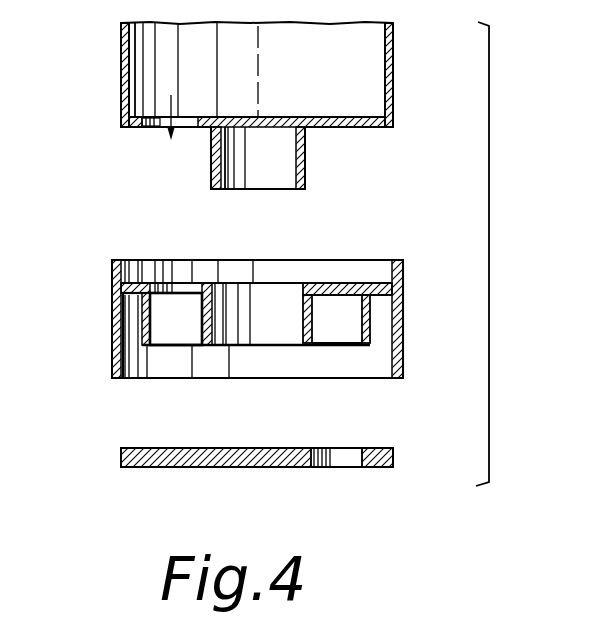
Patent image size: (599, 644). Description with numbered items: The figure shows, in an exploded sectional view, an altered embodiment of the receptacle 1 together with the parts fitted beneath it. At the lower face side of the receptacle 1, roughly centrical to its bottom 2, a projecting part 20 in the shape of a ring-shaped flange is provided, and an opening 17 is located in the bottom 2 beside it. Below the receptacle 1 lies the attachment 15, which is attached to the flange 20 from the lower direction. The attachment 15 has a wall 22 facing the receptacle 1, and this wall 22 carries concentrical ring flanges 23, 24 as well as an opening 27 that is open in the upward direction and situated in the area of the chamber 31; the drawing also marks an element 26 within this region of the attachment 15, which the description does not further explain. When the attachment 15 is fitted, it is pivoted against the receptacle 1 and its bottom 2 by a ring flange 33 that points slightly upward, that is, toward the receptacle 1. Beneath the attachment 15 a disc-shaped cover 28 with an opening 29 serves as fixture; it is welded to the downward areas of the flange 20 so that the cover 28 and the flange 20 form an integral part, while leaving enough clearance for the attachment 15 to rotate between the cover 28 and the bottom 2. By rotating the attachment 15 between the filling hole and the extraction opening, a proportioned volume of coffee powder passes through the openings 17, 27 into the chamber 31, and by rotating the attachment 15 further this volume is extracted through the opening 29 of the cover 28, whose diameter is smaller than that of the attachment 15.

The receptacle 1 is at (393, 62).
The bottom 2 is at (338, 117).
The attachment 15 is at (408, 334).
The opening 17 is at (150, 128).
The projecting part 20 is at (305, 160).
The wall 22 is at (347, 282).
The ring flange 23 is at (313, 328).
The ring flange 24 is at (375, 330).
The insert 26 is at (187, 330).
The opening 27 is at (168, 300).
The cover 28 is at (293, 460).
The opening 29 is at (344, 460).
The chamber 31 is at (173, 337).
The ring flange 33 is at (113, 258).